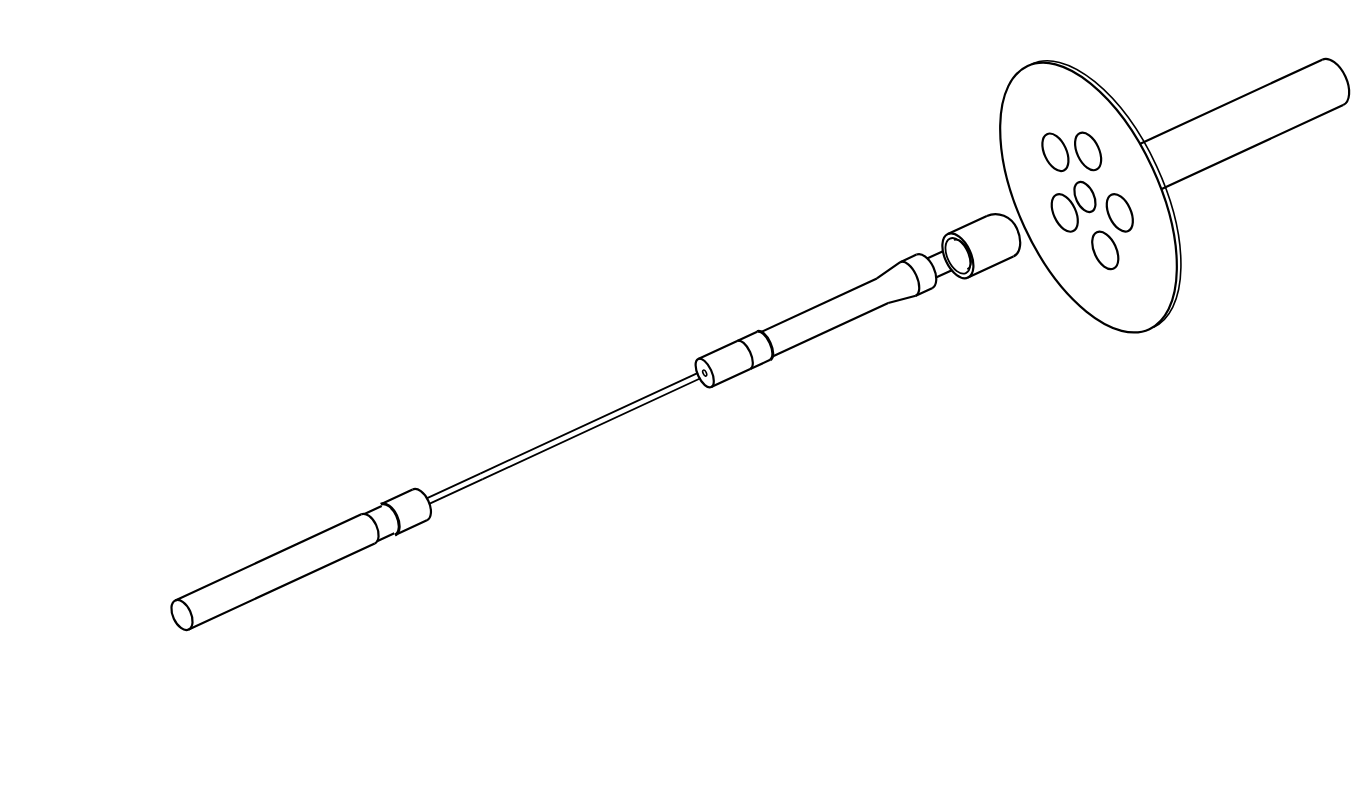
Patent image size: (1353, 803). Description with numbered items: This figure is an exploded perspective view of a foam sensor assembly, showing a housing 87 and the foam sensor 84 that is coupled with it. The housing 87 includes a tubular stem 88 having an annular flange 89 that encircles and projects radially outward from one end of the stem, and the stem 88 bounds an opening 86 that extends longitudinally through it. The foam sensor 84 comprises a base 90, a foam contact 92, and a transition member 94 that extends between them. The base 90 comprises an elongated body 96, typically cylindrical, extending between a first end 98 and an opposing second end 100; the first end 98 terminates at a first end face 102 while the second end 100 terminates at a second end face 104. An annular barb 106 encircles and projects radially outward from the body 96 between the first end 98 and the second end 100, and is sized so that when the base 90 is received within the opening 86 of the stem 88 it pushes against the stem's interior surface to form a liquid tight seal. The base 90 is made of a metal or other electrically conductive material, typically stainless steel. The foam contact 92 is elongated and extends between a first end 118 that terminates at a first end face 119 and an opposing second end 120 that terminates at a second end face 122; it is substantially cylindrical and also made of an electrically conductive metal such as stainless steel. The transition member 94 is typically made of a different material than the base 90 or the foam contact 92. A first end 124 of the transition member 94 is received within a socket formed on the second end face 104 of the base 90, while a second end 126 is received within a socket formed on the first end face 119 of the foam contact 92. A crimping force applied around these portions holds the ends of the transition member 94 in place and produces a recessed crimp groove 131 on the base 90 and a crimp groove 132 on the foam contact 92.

The foam sensor 84 is at (944, 430).
The opening 86 is at (1087, 194).
The housing 87 is at (1277, 140).
The tubular stem 88 is at (1236, 108).
The annular flange 89 is at (1060, 272).
The base 90 is at (843, 298).
The foam contact 92 is at (292, 545).
The transition member 94 is at (585, 433).
The elongated body 96 is at (837, 330).
The first end 98 is at (963, 290).
The second end 100 is at (747, 398).
The first end face 102 is at (1003, 212).
The second end face 104 is at (708, 382).
The annular barb 106 is at (905, 308).
The first end 118 is at (425, 545).
The first end face 119 is at (430, 513).
The second end 120 is at (205, 645).
The second end face 122 is at (182, 622).
The first end 124 is at (682, 368).
The second end 126 is at (431, 478).
The crimp groove 131 is at (750, 340).
The crimp groove 132 is at (383, 537).